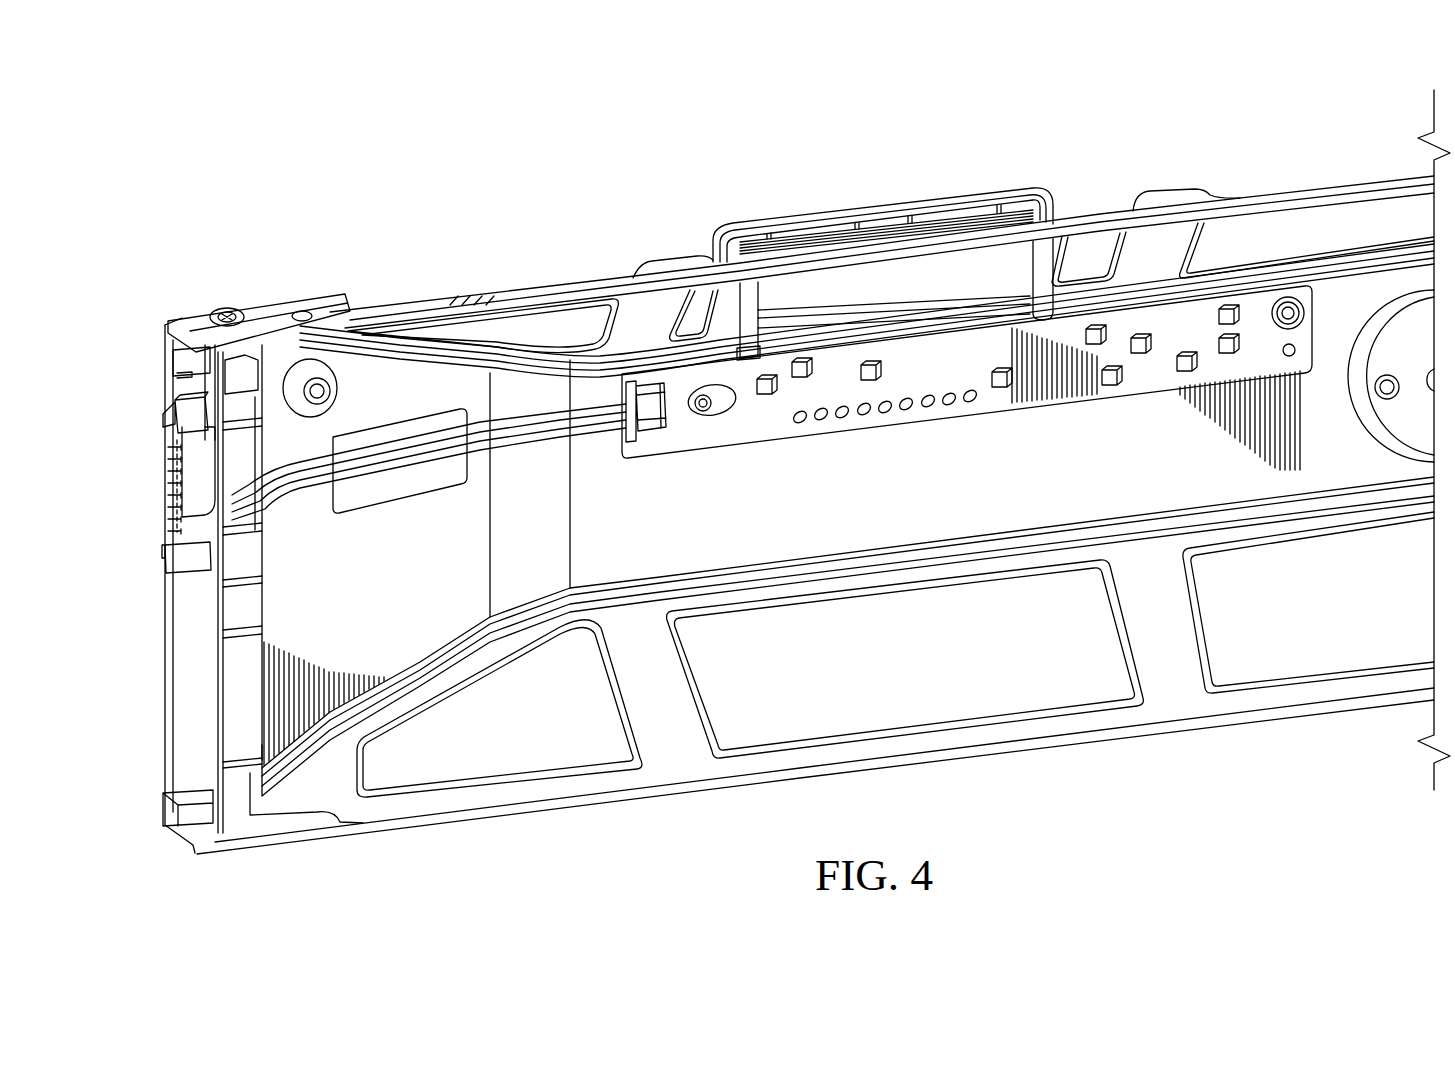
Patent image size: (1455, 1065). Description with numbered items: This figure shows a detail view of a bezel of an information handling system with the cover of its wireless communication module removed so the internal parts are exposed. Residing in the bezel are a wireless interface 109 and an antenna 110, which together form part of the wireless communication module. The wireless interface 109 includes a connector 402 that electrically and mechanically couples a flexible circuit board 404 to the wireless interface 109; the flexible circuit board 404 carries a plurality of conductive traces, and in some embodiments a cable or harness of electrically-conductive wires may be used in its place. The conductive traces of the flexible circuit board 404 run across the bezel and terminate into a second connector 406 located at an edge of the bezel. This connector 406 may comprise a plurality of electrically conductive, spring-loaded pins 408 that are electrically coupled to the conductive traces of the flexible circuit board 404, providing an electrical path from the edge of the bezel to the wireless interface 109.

The antenna 110 is at (748, 243).
The wireless interface 109 is at (1147, 370).
The connector 402 is at (671, 452).
The flexible circuit board 404 is at (302, 488).
The connector 406 is at (165, 420).
The spring-loaded pins 408 is at (148, 456).